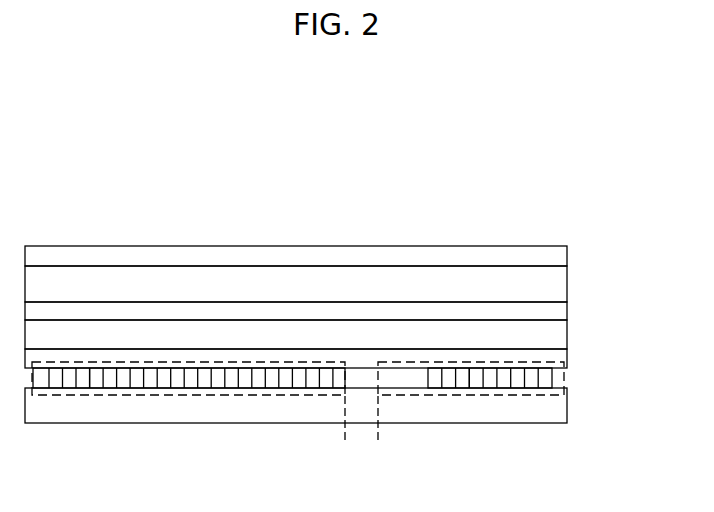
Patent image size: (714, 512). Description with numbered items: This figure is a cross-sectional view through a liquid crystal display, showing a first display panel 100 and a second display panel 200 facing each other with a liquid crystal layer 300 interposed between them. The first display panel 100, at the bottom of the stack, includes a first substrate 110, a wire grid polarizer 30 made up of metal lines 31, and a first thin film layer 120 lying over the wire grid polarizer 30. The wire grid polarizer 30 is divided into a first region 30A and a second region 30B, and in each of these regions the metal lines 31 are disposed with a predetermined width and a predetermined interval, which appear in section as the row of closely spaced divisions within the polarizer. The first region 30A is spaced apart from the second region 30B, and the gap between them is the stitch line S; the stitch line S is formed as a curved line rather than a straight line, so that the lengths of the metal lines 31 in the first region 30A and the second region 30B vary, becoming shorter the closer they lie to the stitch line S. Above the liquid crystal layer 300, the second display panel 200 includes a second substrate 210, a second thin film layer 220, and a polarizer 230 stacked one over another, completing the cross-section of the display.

The polarizer 230 is at (568, 256).
The second substrate 210 is at (568, 281).
The second thin film layer 220 is at (321, 306).
The second display panel 200 is at (342, 280).
The liquid crystal layer 300 is at (568, 330).
The first thin film layer 120 is at (568, 358).
The wire grid polarizer 30 is at (566, 378).
The metal lines 31 is at (83, 385).
The first substrate 110 is at (568, 408).
The first display panel 100 is at (342, 384).
The first region 30A is at (153, 406).
The second region 30B is at (516, 406).
The stitch line S is at (395, 451).